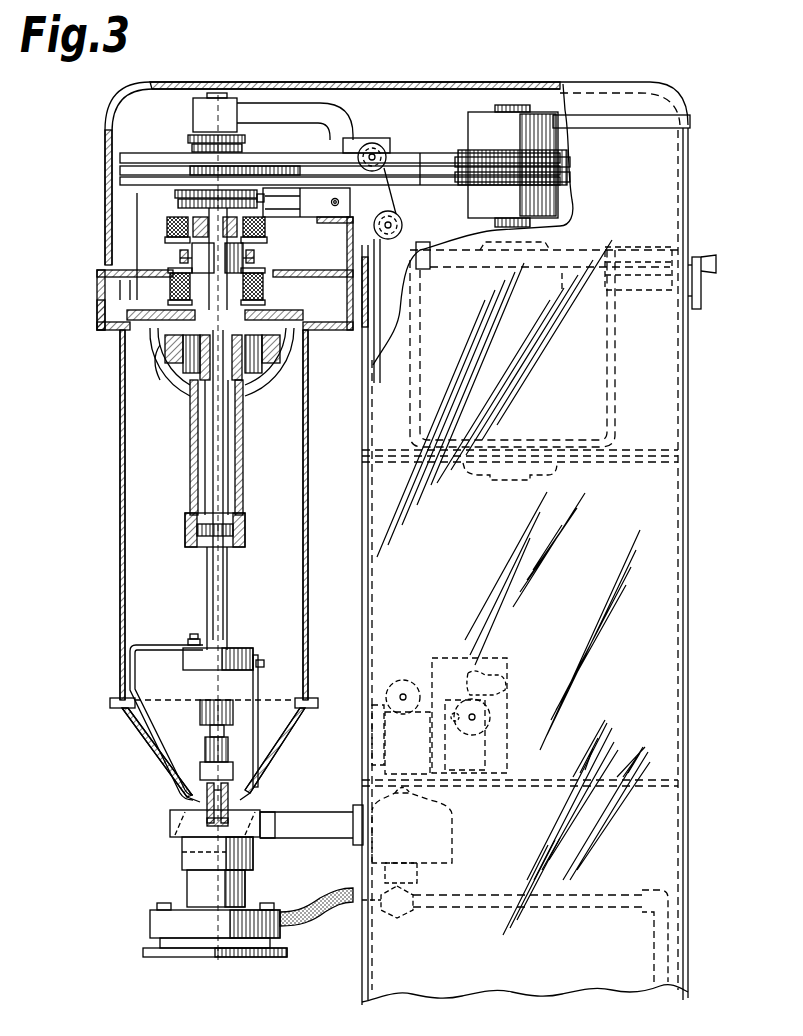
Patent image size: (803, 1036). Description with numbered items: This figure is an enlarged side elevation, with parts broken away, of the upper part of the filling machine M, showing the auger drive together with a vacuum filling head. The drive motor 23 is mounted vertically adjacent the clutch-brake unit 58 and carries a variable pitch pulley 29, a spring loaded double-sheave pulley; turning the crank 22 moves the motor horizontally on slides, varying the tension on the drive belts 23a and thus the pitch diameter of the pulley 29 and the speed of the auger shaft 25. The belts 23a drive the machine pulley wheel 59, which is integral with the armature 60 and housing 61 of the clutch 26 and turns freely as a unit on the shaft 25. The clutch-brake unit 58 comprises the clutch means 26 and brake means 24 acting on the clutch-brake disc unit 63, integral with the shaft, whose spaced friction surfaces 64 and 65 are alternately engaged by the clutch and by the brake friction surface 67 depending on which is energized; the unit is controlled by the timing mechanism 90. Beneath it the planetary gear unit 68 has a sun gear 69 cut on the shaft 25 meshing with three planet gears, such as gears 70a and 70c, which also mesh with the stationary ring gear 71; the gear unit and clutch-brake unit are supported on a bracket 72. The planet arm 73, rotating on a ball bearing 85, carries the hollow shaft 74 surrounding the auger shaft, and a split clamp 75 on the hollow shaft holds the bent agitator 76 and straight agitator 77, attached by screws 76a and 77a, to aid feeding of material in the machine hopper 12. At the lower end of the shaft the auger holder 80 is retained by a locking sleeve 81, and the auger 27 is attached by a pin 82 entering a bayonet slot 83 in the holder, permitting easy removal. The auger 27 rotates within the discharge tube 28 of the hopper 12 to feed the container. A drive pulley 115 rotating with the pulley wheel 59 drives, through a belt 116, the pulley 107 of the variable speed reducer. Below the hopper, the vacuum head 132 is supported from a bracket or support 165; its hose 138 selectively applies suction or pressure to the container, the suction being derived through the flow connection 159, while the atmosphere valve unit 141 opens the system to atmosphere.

The machine M is at (722, 540).
The machine hopper 12 is at (118, 514).
The crank 22 is at (700, 291).
The drive motor 23 is at (583, 383).
The drive belts 23a is at (418, 158).
The brake means 24 is at (163, 311).
The auger shaft 25 is at (216, 97).
The clutch means 26 is at (310, 241).
The auger 27 is at (213, 836).
The discharge tube 28 is at (193, 878).
The variable pitch pulley 29 is at (553, 137).
The clutch-brake unit 58 is at (132, 302).
The machine pulley wheel 59 is at (150, 153).
The armature 60 is at (188, 196).
The housing 61 is at (170, 226).
The clutch-brake disc unit 63 is at (180, 258).
The friction surface 64 is at (267, 243).
The friction surface 65 is at (265, 273).
The friction surface 67 is at (262, 282).
The planetary gear unit 68 is at (293, 347).
The sun gear 69 is at (228, 367).
The planet gear 70a is at (253, 368).
The planet gear 70c is at (177, 357).
The stationary ring gear 71 is at (270, 360).
The bracket 72 is at (100, 322).
The planet arm 73 is at (170, 353).
The hollow shaft 74 is at (227, 448).
The split clamp 75 is at (240, 650).
The bent agitator 76 is at (157, 758).
The screw 76a is at (192, 638).
The straight agitator 77 is at (258, 692).
The screw 77a is at (259, 660).
The auger holder 80 is at (230, 806).
The locking sleeve 81 is at (207, 748).
The pin 82 is at (207, 822).
The bayonet slot 83 is at (207, 810).
The ball bearing 85 is at (193, 377).
The timing mechanism 90 is at (460, 642).
The pulley 107 is at (383, 690).
The drive pulley 115 is at (190, 135).
The belt 116 is at (387, 192).
The vacuum head 132 is at (153, 923).
The hose 138 is at (317, 928).
The atmosphere valve unit 141 is at (430, 866).
The flow connection 159 is at (562, 900).
The bracket or support 165 is at (267, 833).